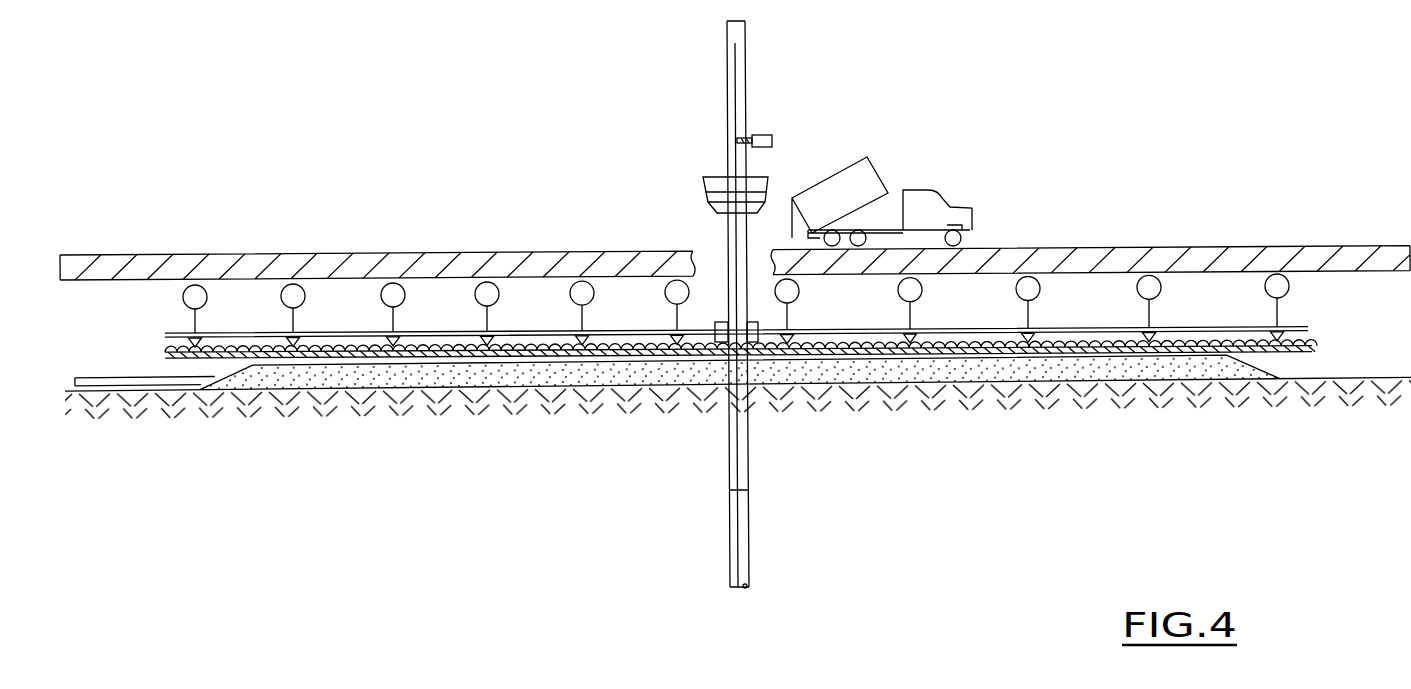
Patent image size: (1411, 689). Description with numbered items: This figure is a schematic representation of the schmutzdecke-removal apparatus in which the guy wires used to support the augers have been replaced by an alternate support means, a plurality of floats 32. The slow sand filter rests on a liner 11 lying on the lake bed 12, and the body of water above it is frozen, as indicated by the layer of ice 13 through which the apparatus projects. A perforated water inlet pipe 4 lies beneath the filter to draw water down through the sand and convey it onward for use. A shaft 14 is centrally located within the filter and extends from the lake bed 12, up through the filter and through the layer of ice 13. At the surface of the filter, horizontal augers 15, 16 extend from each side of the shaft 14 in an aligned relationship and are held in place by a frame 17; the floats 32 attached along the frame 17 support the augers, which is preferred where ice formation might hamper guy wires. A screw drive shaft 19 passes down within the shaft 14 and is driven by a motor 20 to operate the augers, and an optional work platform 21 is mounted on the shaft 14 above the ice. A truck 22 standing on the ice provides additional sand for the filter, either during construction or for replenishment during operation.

The perforated water inlet pipe 4 is at (112, 378).
The liner 11 is at (498, 396).
The lake bed 12 is at (972, 394).
The layer of ice 13 is at (160, 262).
The shaft 14 is at (730, 468).
The auger 15 is at (1313, 348).
The auger 16 is at (247, 349).
The frame 17 is at (542, 331).
The screw drive shaft 19 is at (733, 125).
The motor 20 is at (772, 136).
The work platform 21 is at (707, 201).
The truck 22 is at (928, 174).
The float 32 is at (183, 297).